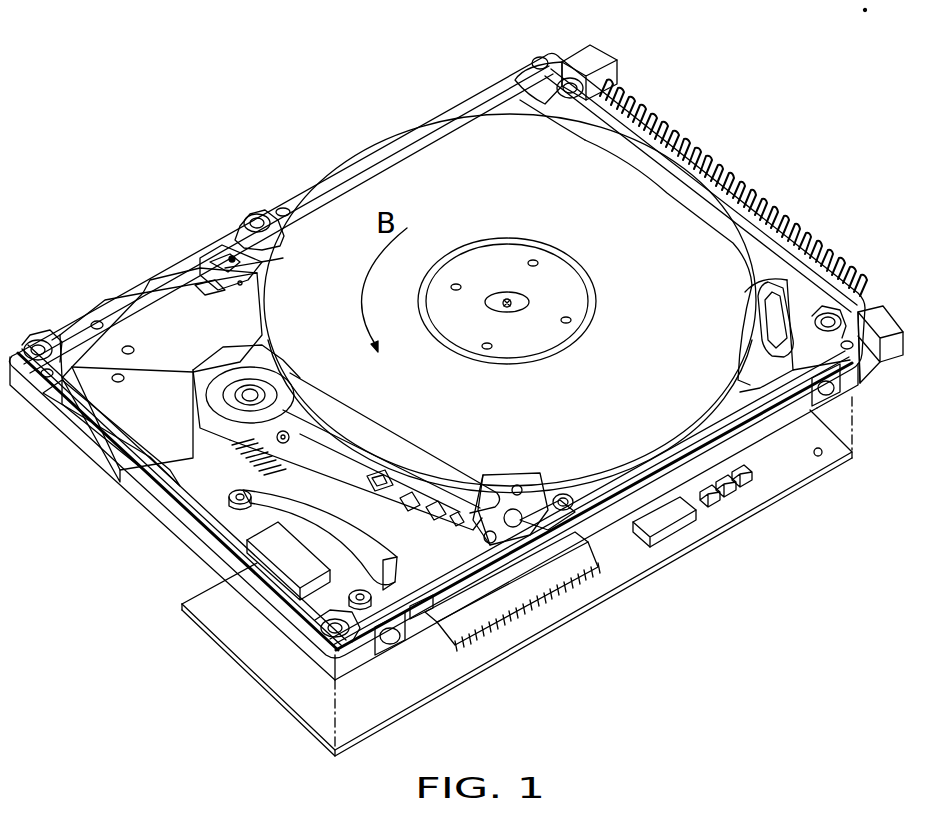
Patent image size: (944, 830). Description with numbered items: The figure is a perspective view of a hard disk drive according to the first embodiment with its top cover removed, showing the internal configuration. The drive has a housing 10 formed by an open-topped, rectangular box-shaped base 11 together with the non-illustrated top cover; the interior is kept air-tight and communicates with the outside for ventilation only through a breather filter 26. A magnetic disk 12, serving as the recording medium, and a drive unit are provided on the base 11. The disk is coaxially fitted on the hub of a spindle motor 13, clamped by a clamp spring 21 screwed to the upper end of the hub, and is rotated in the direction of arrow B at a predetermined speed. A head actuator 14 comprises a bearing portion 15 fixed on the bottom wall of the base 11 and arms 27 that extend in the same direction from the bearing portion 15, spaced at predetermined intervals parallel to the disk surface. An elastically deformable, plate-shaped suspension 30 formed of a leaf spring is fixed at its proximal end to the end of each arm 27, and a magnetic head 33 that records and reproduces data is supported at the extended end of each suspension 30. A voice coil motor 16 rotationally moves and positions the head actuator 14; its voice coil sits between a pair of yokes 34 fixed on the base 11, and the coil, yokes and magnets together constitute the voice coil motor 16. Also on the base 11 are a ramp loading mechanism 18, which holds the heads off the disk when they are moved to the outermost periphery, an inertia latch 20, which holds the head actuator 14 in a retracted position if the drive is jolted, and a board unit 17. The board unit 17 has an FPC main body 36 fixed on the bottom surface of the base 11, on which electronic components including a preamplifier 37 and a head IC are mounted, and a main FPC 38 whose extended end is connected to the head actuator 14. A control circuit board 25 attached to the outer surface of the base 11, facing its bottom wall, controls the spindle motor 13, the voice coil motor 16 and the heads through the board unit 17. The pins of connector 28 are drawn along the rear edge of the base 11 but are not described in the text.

The housing 10 is at (487, 79).
The base 11 is at (417, 568).
The magnetic disk 12 is at (413, 158).
The spindle motor 13 is at (603, 299).
The head actuator 14 is at (297, 429).
The bearing portion 15 is at (281, 383).
The voice coil motor 16 is at (163, 328).
The board unit 17 is at (240, 519).
The ramp loading mechanism 18 is at (548, 535).
The inertia latch 20 is at (204, 263).
The clamp spring 21 is at (537, 250).
The control circuit board 25 is at (633, 563).
The breather filter 26 is at (768, 358).
The arm 27 is at (372, 453).
The connector pins 28 is at (530, 120).
The suspension 30 is at (430, 503).
The magnetic head 33 is at (514, 524).
The yoke 34 is at (138, 412).
The FPC main body 36 is at (317, 593).
The preamplifier 37 is at (287, 550).
The main FPC 38 is at (350, 503).